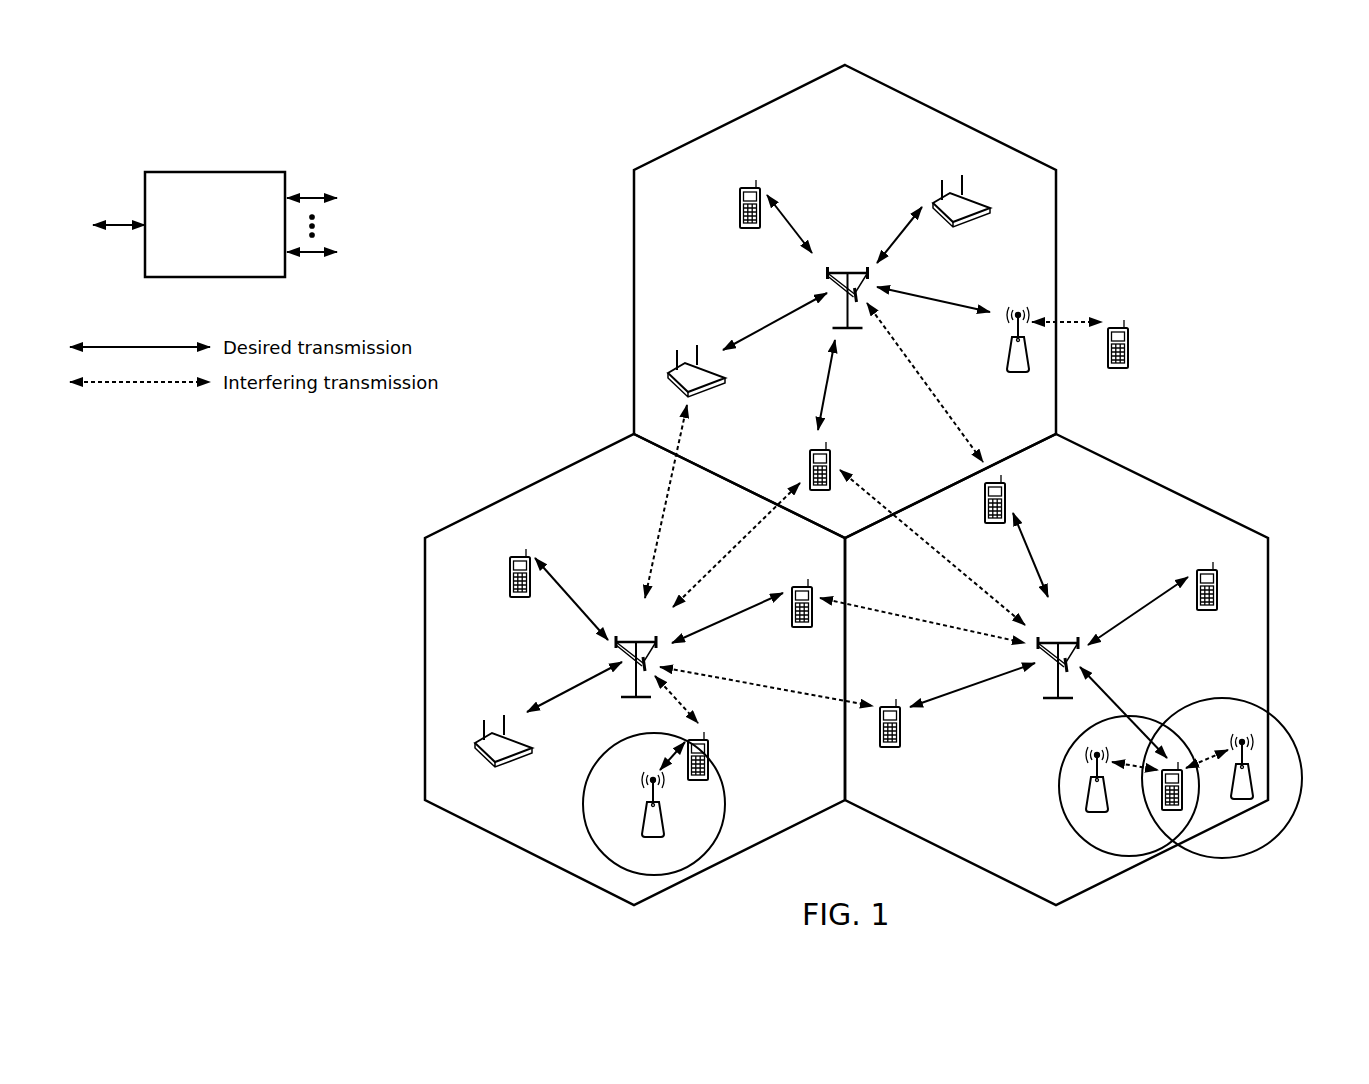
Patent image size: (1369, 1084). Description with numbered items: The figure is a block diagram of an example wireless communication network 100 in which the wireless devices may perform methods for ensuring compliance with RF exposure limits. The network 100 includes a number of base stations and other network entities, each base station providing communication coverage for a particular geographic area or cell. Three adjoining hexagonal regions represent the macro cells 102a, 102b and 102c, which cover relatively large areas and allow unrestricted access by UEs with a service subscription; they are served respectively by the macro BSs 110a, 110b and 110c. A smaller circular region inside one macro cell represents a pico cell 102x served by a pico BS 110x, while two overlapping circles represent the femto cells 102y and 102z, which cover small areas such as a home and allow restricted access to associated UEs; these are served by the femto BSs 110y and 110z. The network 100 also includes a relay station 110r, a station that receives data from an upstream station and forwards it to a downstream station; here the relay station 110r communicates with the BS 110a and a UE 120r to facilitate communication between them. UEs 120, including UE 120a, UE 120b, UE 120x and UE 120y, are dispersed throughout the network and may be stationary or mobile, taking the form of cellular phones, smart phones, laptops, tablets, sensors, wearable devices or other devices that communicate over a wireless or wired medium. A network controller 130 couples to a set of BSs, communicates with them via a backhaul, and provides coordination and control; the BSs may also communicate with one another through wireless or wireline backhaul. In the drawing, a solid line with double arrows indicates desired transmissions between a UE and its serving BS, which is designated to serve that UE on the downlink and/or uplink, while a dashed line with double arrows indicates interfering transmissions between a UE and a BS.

The wireless communication network 100 is at (1202, 133).
The macro cell 102a is at (952, 116).
The macro cell 102b is at (528, 485).
The macro cell 102c is at (1166, 487).
The pico cell 102x is at (604, 750).
The femto cell 102y is at (1066, 752).
The femto cell 102z is at (1238, 683).
The macro BS 110a is at (841, 270).
The macro BS 110b is at (638, 640).
The macro BS 110c is at (1062, 640).
The relay station 110r is at (1009, 360).
The pico BS 110x is at (663, 828).
The femto BS 110y is at (1106, 800).
The femto BS 110z is at (1251, 787).
The user equipment 120 is at (985, 204).
The user equipment 120a is at (741, 197).
The user equipment 120b is at (810, 463).
The user equipment 120r is at (1128, 352).
The user equipment 120x is at (708, 752).
The user equipment 120y is at (1162, 806).
The network controller 130 is at (213, 172).